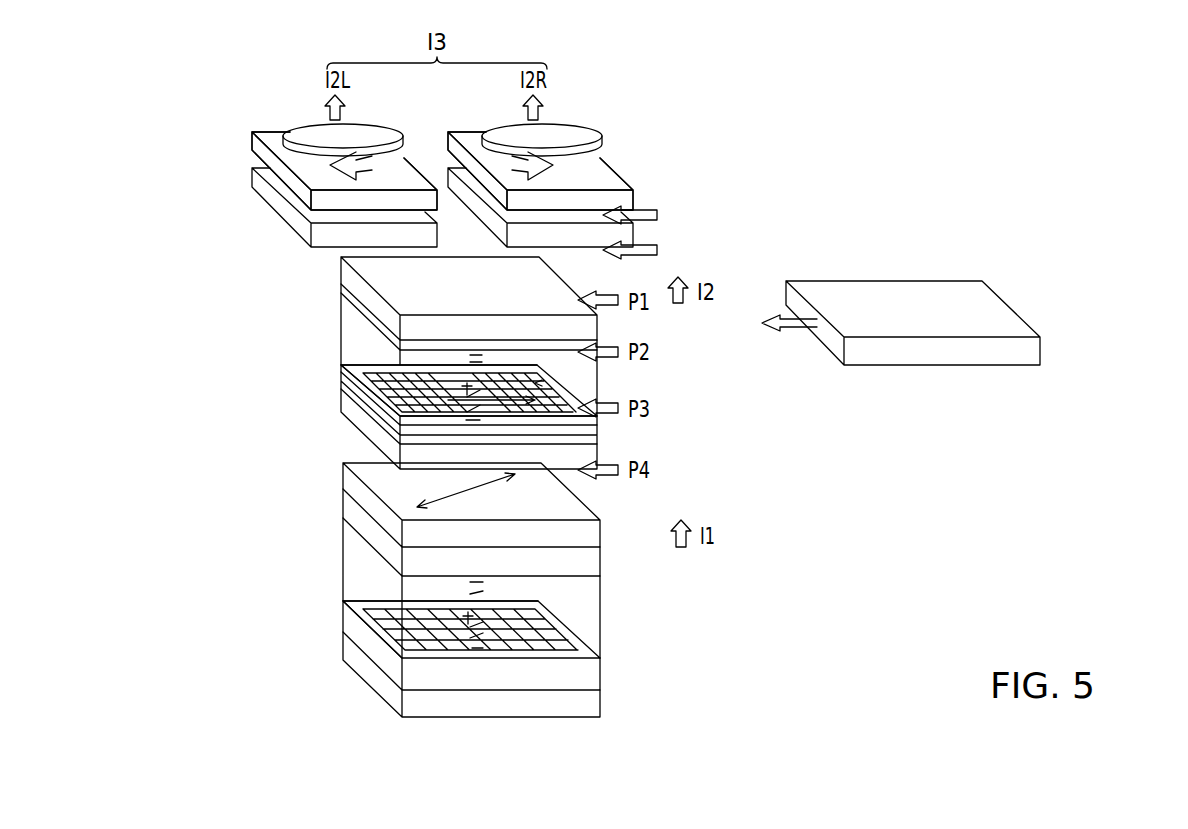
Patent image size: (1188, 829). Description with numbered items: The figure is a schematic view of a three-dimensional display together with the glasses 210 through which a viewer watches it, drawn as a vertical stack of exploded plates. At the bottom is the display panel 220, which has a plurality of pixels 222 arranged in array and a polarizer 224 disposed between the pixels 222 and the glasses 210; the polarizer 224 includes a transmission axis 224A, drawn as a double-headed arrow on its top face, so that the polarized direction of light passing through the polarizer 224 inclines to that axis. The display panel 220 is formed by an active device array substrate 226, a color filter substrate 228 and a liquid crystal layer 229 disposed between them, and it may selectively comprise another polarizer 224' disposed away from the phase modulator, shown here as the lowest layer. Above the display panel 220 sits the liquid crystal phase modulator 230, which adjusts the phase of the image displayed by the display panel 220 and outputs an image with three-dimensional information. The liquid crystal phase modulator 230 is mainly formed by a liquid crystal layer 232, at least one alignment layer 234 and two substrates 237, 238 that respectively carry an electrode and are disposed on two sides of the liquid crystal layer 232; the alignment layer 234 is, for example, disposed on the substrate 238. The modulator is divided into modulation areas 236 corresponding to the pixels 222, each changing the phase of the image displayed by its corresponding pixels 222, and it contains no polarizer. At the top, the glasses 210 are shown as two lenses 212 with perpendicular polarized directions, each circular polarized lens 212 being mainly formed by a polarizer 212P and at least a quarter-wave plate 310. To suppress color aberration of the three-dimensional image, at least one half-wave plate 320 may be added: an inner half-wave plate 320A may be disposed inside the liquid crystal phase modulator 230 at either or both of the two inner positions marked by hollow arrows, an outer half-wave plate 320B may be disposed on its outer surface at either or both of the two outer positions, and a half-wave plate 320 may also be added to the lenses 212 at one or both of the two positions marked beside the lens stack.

The lenses 212 is at (286, 183).
The polarizer 212P is at (258, 148).
The quarter-wave plate 310 is at (258, 186).
The glasses 210 is at (724, 208).
The liquid crystal phase modulator 230 is at (521, 375).
The substrate 237 is at (350, 279).
The modulation areas 236 is at (366, 372).
The alignment layer 234 is at (462, 387).
The liquid crystal layer 232 is at (585, 374).
The substrate 238 is at (348, 408).
The display panel 220 is at (516, 574).
The transmission axis 224A is at (437, 498).
The polarizer 224 is at (432, 504).
The color filter substrate 228 is at (350, 515).
The pixels 222 is at (368, 610).
The liquid crystal layer 229 is at (461, 615).
The active device array substrate 226 is at (461, 631).
The polarizer 224' is at (432, 674).
The half-wave plate 320 is at (951, 336).
The inner half-wave plate 320A is at (951, 336).
The outer half-wave plate 320B is at (901, 323).